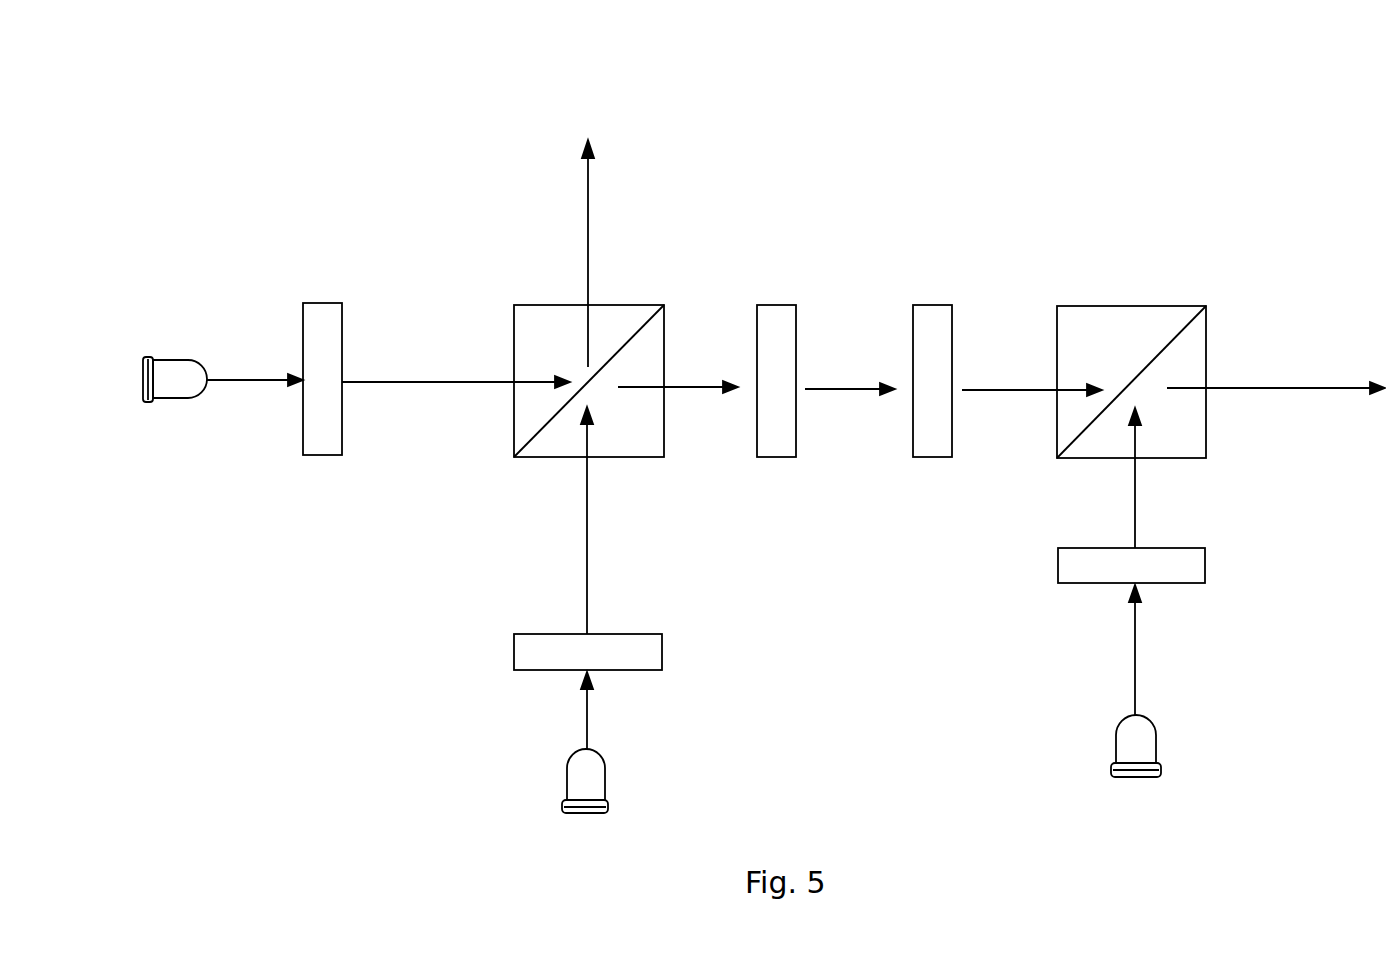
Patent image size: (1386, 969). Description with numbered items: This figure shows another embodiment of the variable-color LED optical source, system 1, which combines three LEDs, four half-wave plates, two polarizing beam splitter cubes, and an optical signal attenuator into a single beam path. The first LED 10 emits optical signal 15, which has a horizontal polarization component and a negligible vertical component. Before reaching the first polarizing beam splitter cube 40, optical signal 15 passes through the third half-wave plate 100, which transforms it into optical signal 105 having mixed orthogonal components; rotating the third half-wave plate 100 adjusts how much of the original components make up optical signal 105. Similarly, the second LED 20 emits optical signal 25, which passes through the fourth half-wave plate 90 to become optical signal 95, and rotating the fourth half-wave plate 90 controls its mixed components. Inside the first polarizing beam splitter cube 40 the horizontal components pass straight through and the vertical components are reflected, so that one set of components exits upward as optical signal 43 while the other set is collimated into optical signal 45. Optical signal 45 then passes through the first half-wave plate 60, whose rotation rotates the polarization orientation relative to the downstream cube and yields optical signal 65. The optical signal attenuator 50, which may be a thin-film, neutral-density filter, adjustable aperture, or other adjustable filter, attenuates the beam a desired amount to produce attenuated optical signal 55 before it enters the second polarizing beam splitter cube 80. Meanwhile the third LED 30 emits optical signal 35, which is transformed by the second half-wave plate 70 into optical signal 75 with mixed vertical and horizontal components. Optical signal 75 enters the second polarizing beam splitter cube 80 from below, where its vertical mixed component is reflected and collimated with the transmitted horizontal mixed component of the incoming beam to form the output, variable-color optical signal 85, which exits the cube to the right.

The system 1 is at (378, 160).
The first LED 10 is at (180, 358).
The optical signal 15 is at (270, 383).
The third half-wave plate 100 is at (327, 302).
The optical signal 105 is at (386, 382).
The first polarizing beam splitter cube 40 is at (523, 303).
The optical signal 43 is at (590, 180).
The optical signal 45 is at (648, 388).
The optical signal 95 is at (587, 522).
The fourth half-wave plate 90 is at (514, 657).
The optical signal 25 is at (587, 738).
The second LED 20 is at (567, 768).
The first half-wave plate 60 is at (773, 303).
The optical signal 65 is at (860, 390).
The optical signal attenuator 50 is at (933, 303).
The attenuated optical signal 55 is at (1013, 390).
The second polarizing beam splitter cube 80 is at (1133, 303).
The optical signal 75 is at (1138, 482).
The variable-color optical signal 85 is at (1278, 392).
The second half-wave plate 70 is at (1058, 563).
The optical signal 35 is at (1135, 637).
The third LED 30 is at (1116, 718).